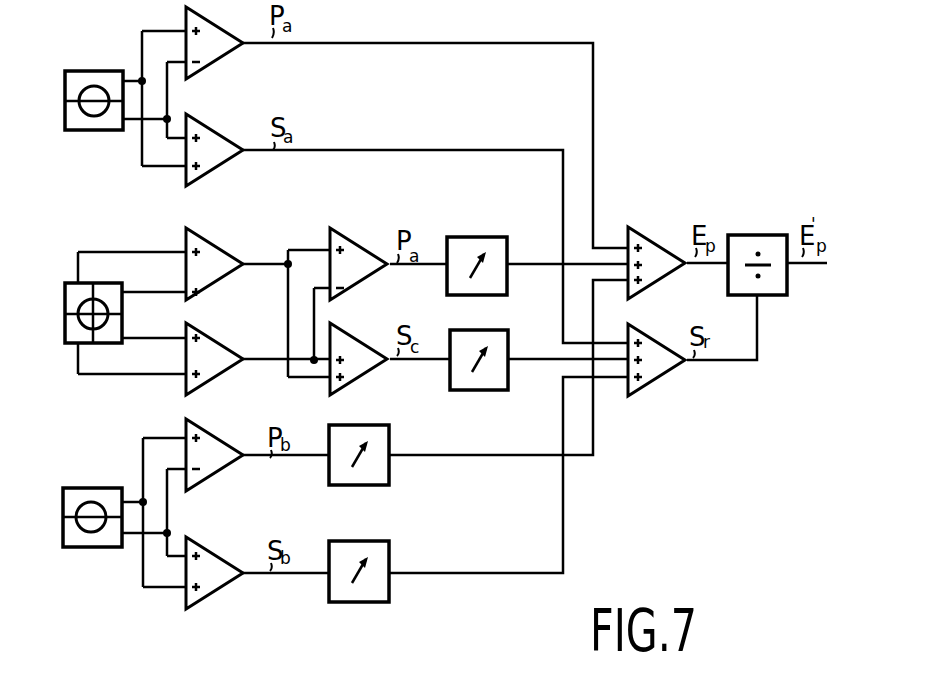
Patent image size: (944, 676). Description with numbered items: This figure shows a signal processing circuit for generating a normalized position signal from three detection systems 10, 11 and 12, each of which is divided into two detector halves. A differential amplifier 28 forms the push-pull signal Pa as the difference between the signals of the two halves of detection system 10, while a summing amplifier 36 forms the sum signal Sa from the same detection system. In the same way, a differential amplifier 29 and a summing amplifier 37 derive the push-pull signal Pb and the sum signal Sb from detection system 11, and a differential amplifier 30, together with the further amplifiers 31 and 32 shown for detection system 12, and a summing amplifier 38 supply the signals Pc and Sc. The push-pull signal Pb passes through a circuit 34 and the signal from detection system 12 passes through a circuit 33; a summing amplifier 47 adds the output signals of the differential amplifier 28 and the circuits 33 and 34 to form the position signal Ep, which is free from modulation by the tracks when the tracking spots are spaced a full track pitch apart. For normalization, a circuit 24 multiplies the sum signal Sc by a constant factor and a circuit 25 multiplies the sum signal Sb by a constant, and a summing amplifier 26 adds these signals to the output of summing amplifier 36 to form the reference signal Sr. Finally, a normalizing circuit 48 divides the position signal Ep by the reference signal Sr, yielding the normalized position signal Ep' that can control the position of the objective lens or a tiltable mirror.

The detection system 10 is at (45, 118).
The detection system 11 is at (47, 531).
The detection system 12 is at (50, 327).
The differential amplifier 28 is at (223, 63).
The summing amplifier 36 is at (223, 170).
The differential amplifier 30 is at (227, 282).
The summing amplifier 31 is at (221, 376).
The differential amplifier 32 is at (372, 277).
The summing amplifier 38 is at (372, 372).
The differential amplifier 29 is at (223, 474).
The summing amplifier 37 is at (223, 588).
The circuit 33 is at (497, 296).
The circuit 24 is at (498, 391).
The circuit 34 is at (364, 486).
The circuit 25 is at (369, 603).
The summing amplifier 47 is at (658, 282).
The summing amplifier 26 is at (670, 380).
The normalizing circuit 48 is at (770, 296).